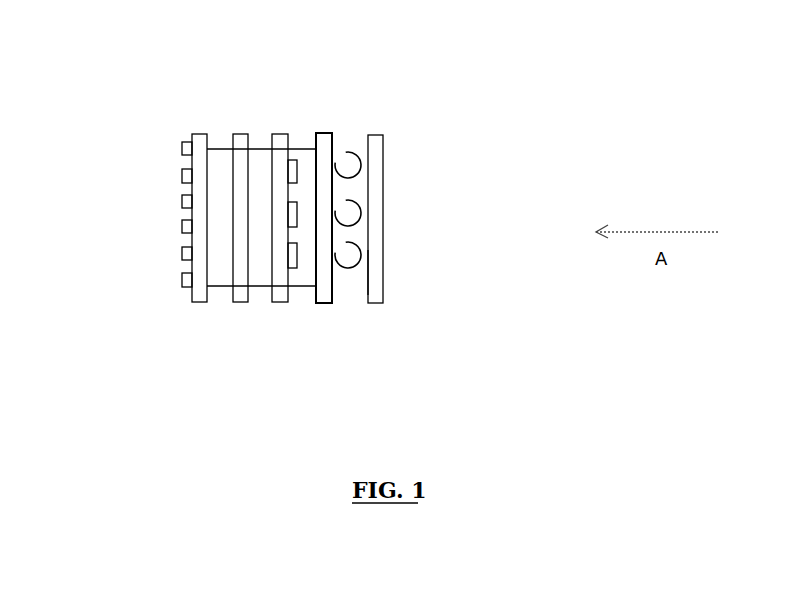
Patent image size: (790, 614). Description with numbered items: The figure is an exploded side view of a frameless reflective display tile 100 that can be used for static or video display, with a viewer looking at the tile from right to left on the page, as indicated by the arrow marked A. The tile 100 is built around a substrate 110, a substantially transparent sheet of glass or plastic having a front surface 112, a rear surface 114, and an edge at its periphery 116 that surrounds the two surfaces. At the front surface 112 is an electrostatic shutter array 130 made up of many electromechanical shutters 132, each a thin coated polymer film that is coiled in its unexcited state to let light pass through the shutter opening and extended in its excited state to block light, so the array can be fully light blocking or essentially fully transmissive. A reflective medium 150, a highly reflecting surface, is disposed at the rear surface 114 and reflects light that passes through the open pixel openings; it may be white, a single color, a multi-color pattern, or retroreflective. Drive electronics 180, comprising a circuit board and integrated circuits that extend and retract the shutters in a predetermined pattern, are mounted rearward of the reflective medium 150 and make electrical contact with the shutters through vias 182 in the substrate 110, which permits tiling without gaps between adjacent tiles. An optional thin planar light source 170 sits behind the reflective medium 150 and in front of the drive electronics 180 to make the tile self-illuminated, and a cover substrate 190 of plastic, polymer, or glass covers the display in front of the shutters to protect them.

The frameless reflective display tile 100 is at (271, 215).
The substrate 110 is at (327, 300).
The front surface 112 is at (333, 150).
The rear surface 114 is at (323, 137).
The edge at periphery 116 is at (320, 135).
The electrostatic shutter array 130 is at (351, 290).
The electromechanical shutter 132 is at (357, 163).
The reflective medium 150 is at (285, 299).
The planar light source 170 is at (240, 298).
The drive electronics 180 is at (195, 297).
The vias 182 is at (333, 183).
The cover substrate 190 is at (377, 270).